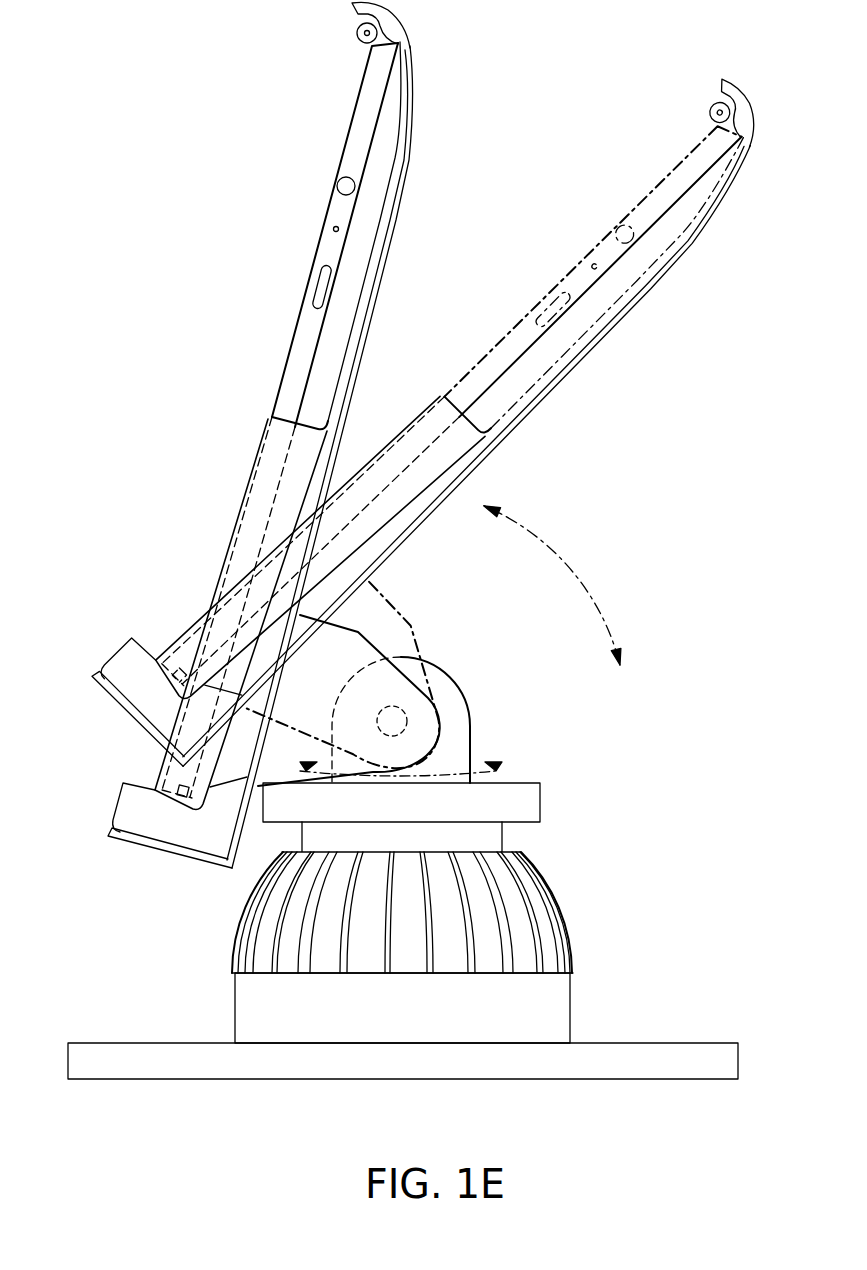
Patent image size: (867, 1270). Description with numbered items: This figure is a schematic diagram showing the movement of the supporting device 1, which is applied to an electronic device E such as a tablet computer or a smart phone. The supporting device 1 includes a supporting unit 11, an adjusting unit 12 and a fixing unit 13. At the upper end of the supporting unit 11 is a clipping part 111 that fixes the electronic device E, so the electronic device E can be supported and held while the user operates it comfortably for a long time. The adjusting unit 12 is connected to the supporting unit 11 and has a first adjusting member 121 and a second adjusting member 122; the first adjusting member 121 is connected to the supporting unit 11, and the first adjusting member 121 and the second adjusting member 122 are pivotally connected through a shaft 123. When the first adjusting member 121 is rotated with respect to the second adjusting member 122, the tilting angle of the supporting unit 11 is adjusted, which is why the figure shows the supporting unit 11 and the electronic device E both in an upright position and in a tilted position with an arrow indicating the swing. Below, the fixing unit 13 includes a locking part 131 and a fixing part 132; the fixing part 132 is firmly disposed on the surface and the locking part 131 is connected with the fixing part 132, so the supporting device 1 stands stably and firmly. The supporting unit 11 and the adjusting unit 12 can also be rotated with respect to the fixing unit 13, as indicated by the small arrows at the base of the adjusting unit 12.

The supporting device 1 is at (98, 81).
The supporting unit 11 is at (292, 435).
The clipping part 111 is at (357, 35).
The electronic device E is at (288, 378).
The adjusting unit 12 is at (414, 686).
The first adjusting member 121 is at (370, 638).
The second adjusting member 122 is at (457, 714).
The shaft 123 is at (395, 720).
The fixing unit 13 is at (407, 931).
The locking part 131 is at (545, 935).
The fixing part 132 is at (403, 1026).